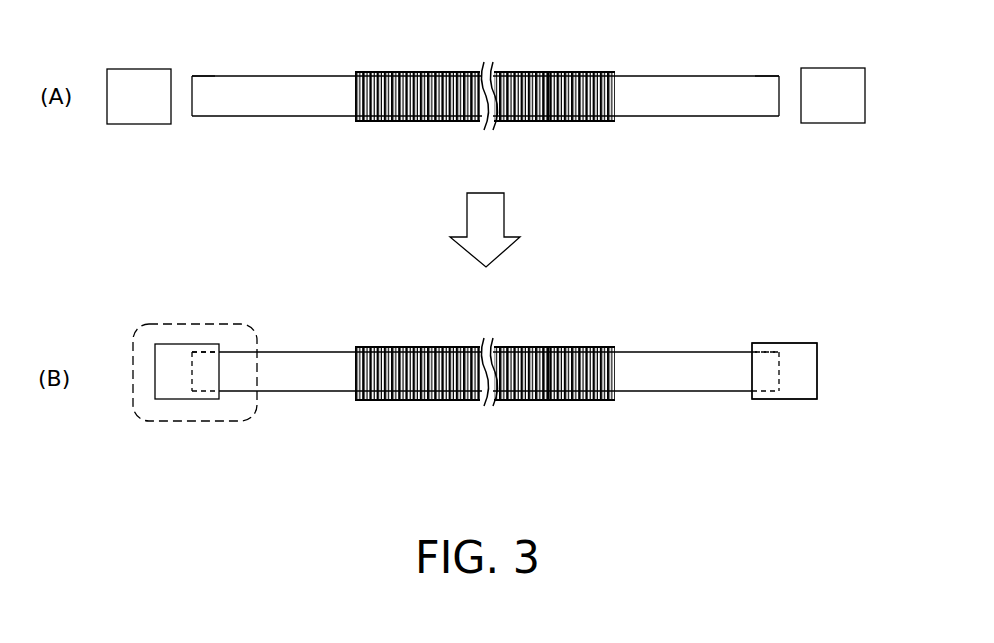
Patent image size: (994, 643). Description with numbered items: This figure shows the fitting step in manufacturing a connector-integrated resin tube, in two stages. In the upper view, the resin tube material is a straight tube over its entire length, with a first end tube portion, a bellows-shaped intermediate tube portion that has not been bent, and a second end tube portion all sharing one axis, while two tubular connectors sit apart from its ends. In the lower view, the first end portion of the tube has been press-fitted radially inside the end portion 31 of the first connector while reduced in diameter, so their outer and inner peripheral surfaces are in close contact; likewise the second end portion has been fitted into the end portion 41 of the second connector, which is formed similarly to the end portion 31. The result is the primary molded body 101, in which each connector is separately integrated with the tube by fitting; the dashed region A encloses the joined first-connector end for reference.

The end portion of the first connector 31 is at (208, 400).
The end portion of the second connector 41 is at (765, 400).
The primary molded body 101 is at (815, 345).
The region A is at (248, 419).